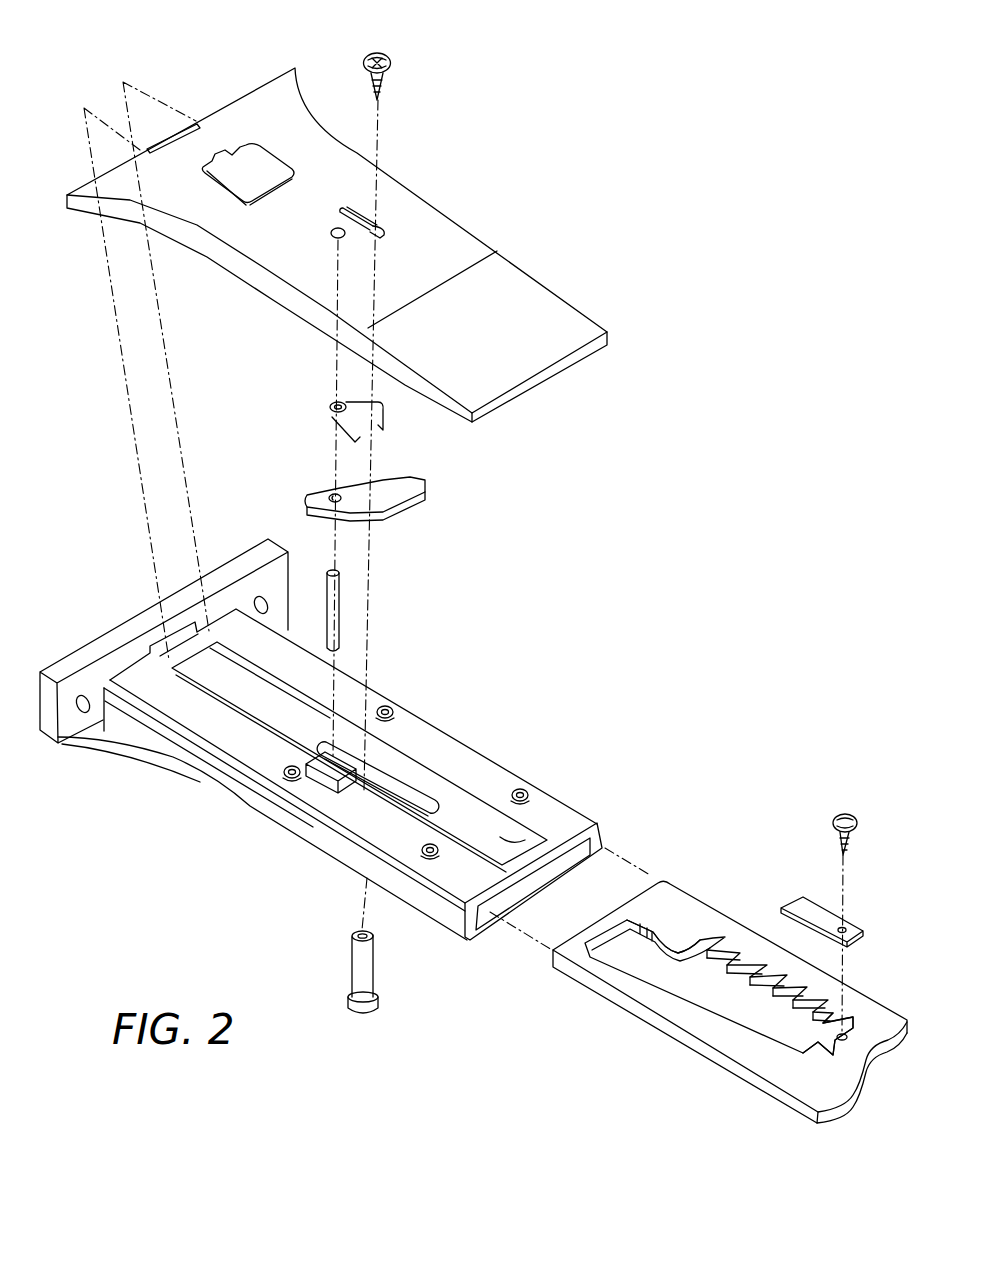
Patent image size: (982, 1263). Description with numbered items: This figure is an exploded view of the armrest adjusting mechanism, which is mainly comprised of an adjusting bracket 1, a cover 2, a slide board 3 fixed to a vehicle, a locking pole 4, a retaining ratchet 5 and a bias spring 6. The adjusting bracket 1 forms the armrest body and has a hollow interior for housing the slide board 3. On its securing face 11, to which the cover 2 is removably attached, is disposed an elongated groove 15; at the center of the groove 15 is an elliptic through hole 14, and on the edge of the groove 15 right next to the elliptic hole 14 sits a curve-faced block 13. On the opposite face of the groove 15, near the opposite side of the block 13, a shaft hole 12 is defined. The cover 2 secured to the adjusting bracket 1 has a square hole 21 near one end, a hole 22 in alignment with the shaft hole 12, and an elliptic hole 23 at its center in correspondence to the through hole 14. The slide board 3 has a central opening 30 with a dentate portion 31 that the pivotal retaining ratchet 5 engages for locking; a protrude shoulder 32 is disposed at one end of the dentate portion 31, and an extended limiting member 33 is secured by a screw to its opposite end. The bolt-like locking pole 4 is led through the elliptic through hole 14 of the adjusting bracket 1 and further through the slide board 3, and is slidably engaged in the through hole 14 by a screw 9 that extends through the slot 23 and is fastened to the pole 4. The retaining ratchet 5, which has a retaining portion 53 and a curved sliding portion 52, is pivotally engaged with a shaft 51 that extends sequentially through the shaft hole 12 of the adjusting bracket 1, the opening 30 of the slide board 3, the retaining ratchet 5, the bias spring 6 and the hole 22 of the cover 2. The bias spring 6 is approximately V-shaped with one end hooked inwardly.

The adjusting bracket 1 is at (508, 733).
The cover 2 is at (515, 242).
The slide board 3 is at (686, 905).
The locking pole 4 is at (358, 972).
The retaining ratchet 5 is at (303, 485).
The bias spring 6 is at (326, 404).
The screw 9 is at (398, 52).
The securing face 11 is at (423, 737).
The shaft hole 12 is at (322, 797).
The curve-faced block 13 is at (343, 761).
The elliptic through hole 14 is at (423, 795).
The elongated groove 15 is at (540, 833).
The square hole 21 is at (270, 152).
The hole 22 is at (338, 226).
The elliptic hole 23 is at (378, 230).
The central opening 30 is at (775, 1013).
The dentate portion 31 is at (737, 983).
The protrude shoulder 32 is at (692, 958).
The extended limiting member 33 is at (798, 895).
The shaft 51 is at (328, 583).
The curved sliding portion 52 is at (383, 477).
The retaining portion 53 is at (433, 479).